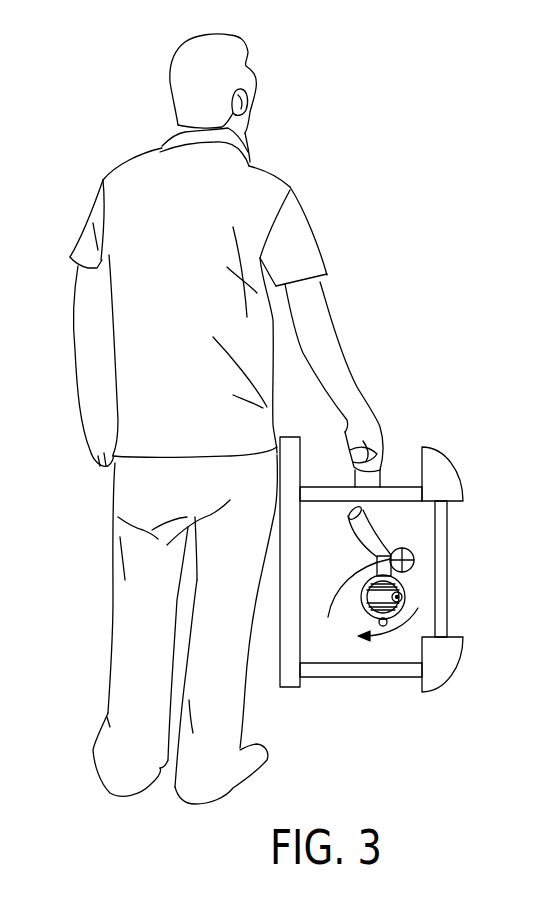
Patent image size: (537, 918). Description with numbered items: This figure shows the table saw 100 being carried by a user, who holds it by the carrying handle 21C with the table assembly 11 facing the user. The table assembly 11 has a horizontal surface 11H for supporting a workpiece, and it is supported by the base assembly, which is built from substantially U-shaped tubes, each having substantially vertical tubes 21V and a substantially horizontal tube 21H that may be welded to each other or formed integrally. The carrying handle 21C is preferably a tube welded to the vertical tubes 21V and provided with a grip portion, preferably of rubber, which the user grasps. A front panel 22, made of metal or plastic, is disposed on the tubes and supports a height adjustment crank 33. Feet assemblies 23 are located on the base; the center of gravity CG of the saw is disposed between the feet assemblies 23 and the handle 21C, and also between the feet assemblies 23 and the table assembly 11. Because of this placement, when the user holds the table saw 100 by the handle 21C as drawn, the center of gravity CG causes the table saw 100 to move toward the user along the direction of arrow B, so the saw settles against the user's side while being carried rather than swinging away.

The table assembly 11 is at (226, 419).
The horizontal surface 11H is at (280, 568).
The table saw 100 is at (399, 596).
The carrying handle 21C is at (380, 477).
The horizontal tube 21H is at (447, 582).
The vertical tube 21V is at (352, 673).
The front panel 22 is at (427, 624).
The feet assembly 23 is at (452, 477).
The height adjustment crank 33 is at (401, 597).
The center of gravity CG is at (352, 604).
The arrow B direction B is at (388, 635).